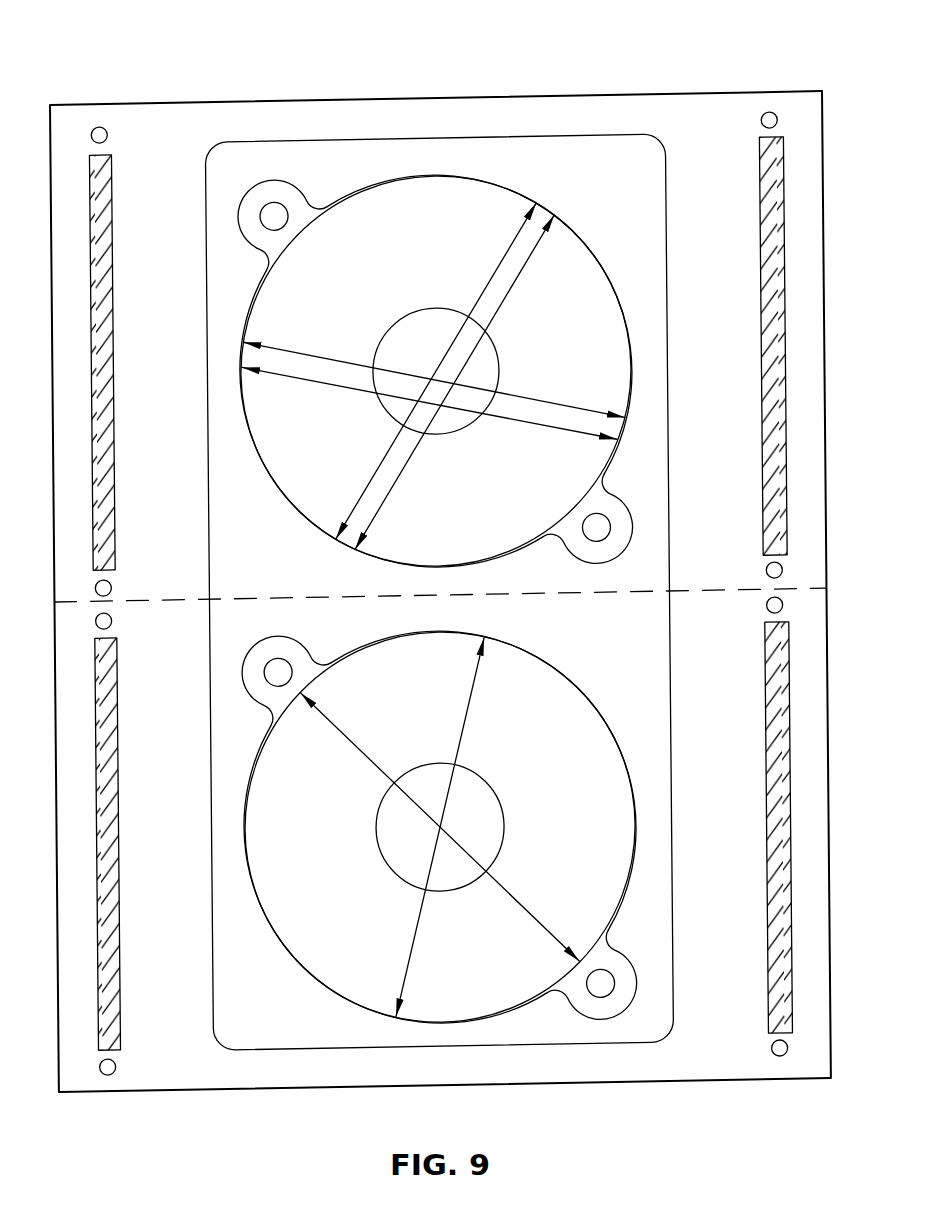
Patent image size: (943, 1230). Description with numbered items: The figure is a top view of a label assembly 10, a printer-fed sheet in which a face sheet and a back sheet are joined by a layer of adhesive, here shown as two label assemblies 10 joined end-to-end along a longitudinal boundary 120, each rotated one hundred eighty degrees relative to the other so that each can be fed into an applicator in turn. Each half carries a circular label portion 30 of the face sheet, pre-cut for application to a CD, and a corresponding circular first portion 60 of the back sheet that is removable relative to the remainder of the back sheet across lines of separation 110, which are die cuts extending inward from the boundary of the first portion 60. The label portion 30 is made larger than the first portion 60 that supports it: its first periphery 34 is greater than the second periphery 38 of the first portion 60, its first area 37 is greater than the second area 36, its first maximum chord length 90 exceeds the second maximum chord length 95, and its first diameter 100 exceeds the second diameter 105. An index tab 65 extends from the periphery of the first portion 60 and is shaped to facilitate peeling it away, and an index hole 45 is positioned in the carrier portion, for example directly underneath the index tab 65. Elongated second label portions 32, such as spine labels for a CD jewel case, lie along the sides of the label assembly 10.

The label assembly 10 is at (440, 588).
The label portion 30 is at (457, 80).
The second label portion 32 is at (713, 226).
The first periphery 34 is at (429, 436).
The second area 36 is at (435, 371).
The first area 37 is at (428, 271).
The second periphery 38 is at (434, 379).
The index hole 45 is at (438, 554).
The first portion 60 is at (382, 80).
The index tab 65 is at (241, 87).
The first maximum chord length 90 is at (440, 823).
The second maximum chord length 95 is at (411, 622).
The first diameter 100 is at (480, 817).
The second diameter 105 is at (366, 815).
The lines of separation 110 is at (435, 371).
The longitudinal boundary 120 is at (440, 563).